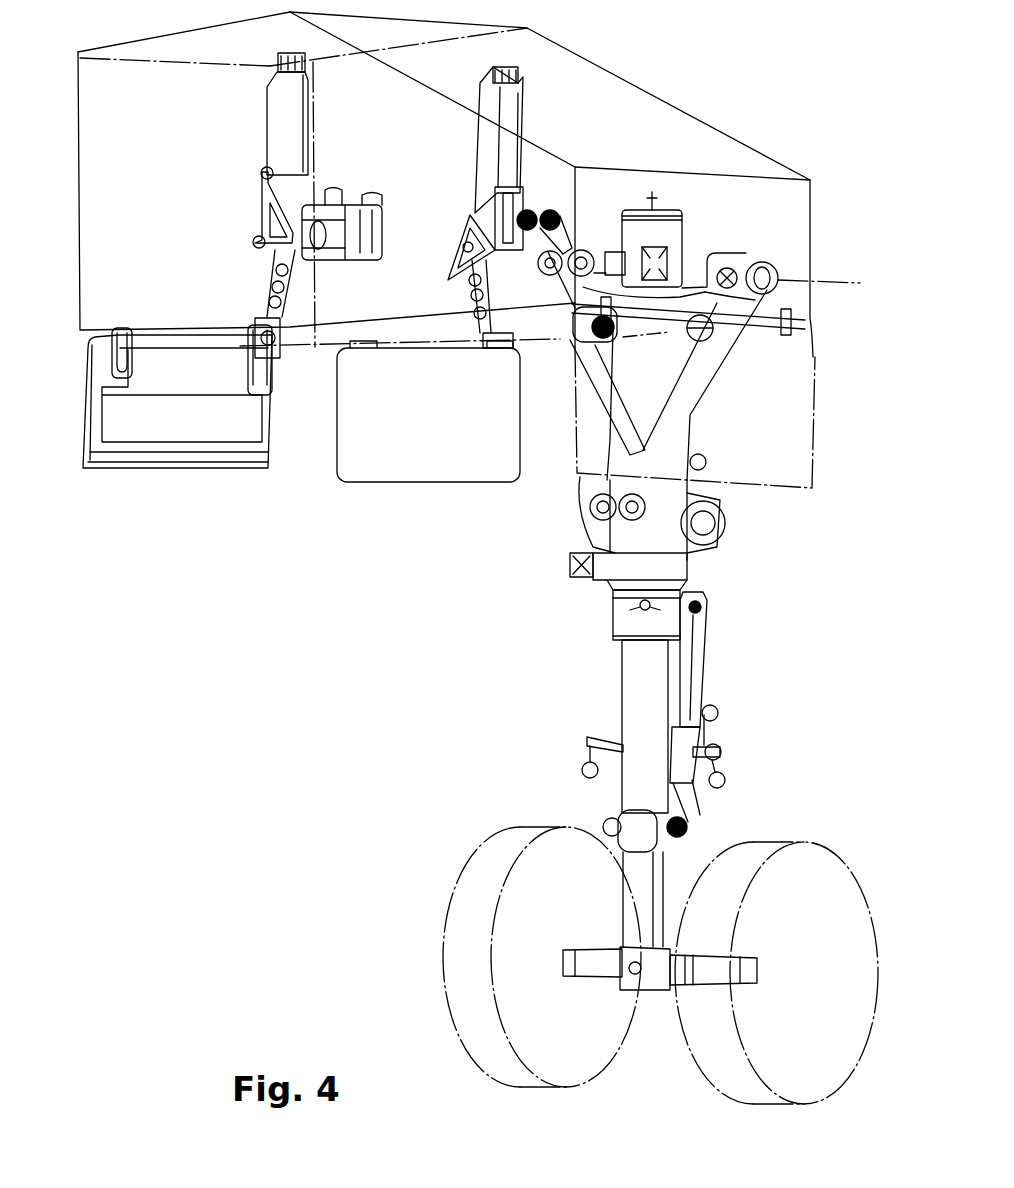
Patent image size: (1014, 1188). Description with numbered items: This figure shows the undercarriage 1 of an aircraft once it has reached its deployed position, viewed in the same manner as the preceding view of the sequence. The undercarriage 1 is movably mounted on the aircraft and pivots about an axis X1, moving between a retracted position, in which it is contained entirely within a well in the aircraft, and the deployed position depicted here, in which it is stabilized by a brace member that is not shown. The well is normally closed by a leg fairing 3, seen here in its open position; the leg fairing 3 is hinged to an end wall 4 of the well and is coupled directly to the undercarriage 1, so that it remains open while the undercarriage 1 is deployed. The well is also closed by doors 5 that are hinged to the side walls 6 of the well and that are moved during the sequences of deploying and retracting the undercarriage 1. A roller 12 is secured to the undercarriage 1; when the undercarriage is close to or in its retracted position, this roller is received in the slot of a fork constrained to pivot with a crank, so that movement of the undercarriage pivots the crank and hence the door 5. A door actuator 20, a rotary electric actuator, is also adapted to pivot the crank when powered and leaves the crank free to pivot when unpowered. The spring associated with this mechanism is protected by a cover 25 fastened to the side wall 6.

The undercarriage 1 is at (597, 678).
The leg fairing 3 is at (780, 480).
The end wall 4 is at (778, 200).
The doors 5 is at (178, 425).
The side walls 6 is at (98, 190).
The roller 12 is at (585, 773).
The door actuator 20 is at (345, 217).
The cover 25 is at (273, 142).
The axis X1 is at (820, 280).